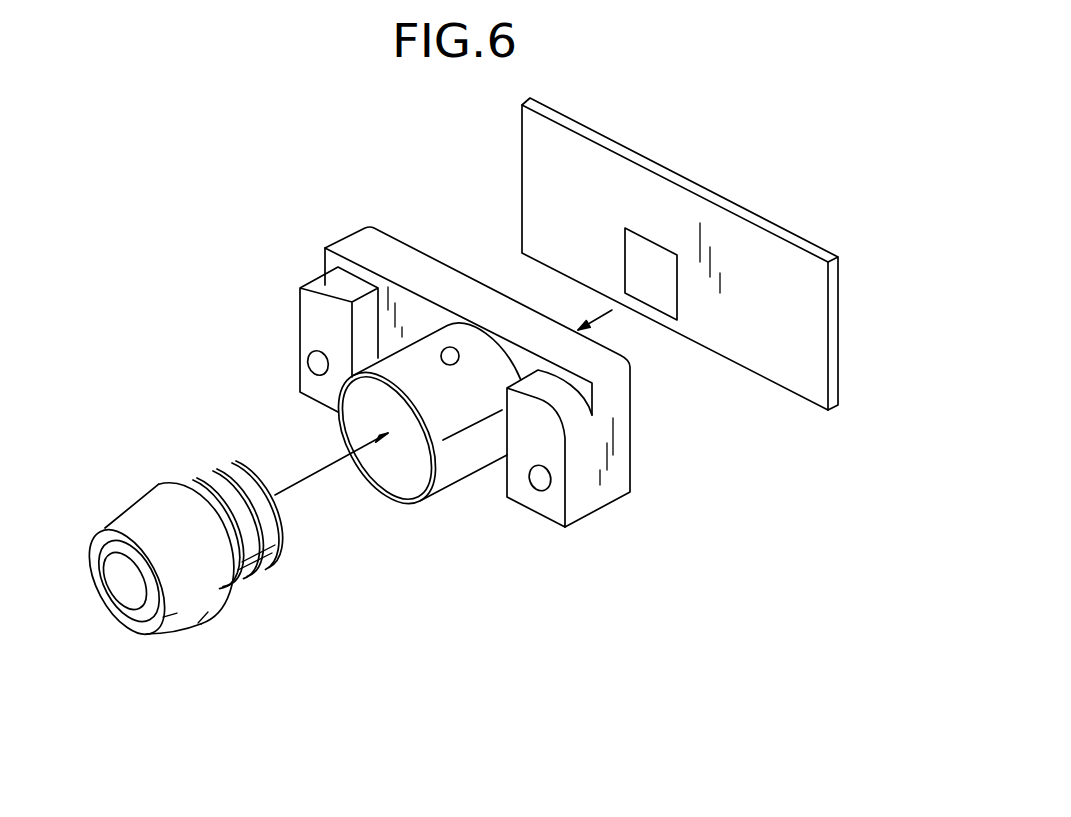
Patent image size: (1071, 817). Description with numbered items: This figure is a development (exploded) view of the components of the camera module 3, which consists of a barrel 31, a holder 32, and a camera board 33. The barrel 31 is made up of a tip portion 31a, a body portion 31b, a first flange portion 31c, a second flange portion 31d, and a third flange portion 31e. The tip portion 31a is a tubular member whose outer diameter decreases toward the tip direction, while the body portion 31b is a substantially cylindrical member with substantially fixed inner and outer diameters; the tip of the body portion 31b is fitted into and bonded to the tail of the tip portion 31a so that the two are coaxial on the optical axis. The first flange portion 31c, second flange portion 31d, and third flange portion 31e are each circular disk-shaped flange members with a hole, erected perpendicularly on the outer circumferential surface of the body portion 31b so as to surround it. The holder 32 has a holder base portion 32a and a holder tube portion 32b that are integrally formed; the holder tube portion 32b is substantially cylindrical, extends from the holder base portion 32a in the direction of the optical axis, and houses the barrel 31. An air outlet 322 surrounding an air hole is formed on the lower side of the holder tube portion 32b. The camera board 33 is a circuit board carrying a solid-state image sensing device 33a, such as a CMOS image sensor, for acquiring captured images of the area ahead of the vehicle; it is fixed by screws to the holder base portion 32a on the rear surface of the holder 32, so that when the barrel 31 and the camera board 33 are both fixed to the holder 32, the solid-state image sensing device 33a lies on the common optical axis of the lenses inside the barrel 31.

The camera module 3 is at (302, 212).
The barrel 31 is at (200, 455).
The tip portion 31a is at (147, 507).
The body portion 31b is at (260, 470).
The first flange portion 31c is at (193, 480).
The second flange portion 31d is at (257, 568).
The third flange portion 31e is at (279, 531).
The holder 32 is at (289, 291).
The holder base portion 32a is at (388, 248).
The holder tube portion 32b is at (468, 447).
The air outlet 322 is at (450, 355).
The camera board 33 is at (767, 348).
The solid-state image sensing device 33a is at (663, 297).